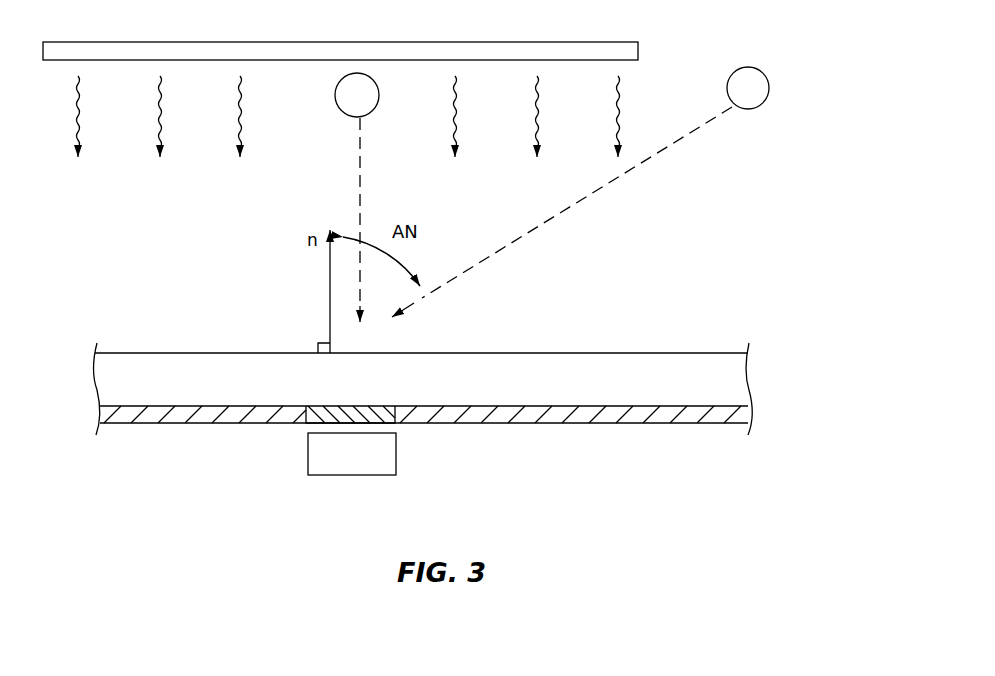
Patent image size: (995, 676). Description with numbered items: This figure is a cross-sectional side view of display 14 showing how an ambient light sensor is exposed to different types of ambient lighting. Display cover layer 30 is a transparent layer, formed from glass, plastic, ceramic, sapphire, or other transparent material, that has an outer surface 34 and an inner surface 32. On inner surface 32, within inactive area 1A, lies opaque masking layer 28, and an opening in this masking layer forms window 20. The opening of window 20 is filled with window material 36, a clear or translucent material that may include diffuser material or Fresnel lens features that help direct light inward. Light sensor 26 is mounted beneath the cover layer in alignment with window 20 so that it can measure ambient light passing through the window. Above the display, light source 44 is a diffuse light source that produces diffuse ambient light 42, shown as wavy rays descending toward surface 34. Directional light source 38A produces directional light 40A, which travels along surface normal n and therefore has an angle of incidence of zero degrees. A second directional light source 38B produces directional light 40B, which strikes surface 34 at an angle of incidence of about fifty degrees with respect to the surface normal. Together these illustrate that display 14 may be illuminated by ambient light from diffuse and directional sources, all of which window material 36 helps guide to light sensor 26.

The light source 44 is at (638, 45).
The diffuse ambient light 42 is at (80, 103).
The directional light source 38A is at (379, 95).
The directional light source 38B is at (769, 89).
The directional light 40A is at (361, 194).
The directional light 40B is at (530, 229).
The display 14 is at (830, 200).
The inactive area 1A is at (723, 333).
The window 20 is at (414, 340).
The surface 34 is at (544, 352).
The display cover layer 30 is at (643, 362).
The inner surface 32 is at (585, 412).
The opaque masking layer 28 is at (185, 421).
The window material 36 is at (335, 423).
The light sensor 26 is at (352, 468).